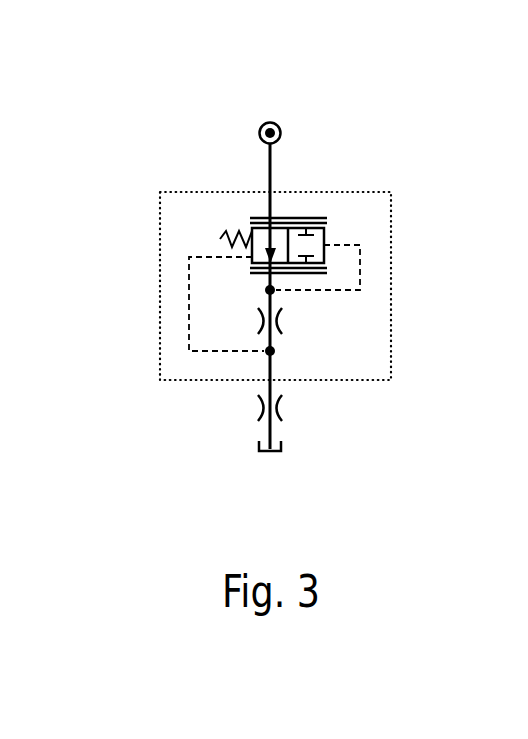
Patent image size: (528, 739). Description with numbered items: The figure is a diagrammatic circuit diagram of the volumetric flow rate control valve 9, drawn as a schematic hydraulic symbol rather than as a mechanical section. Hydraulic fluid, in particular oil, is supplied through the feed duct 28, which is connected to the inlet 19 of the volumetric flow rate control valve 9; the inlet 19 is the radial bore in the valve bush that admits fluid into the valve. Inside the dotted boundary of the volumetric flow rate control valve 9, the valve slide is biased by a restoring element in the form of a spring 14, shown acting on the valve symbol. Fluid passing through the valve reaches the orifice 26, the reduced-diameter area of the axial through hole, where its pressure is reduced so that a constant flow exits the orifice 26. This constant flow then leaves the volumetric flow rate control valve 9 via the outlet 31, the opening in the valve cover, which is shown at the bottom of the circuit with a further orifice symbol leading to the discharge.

The volumetric flow rate control valve 9 is at (157, 132).
The feed duct 28 is at (272, 163).
The radial bore 19 is at (272, 192).
The spring 14 is at (225, 240).
The orifice 26 is at (289, 323).
The opening 31 is at (270, 380).